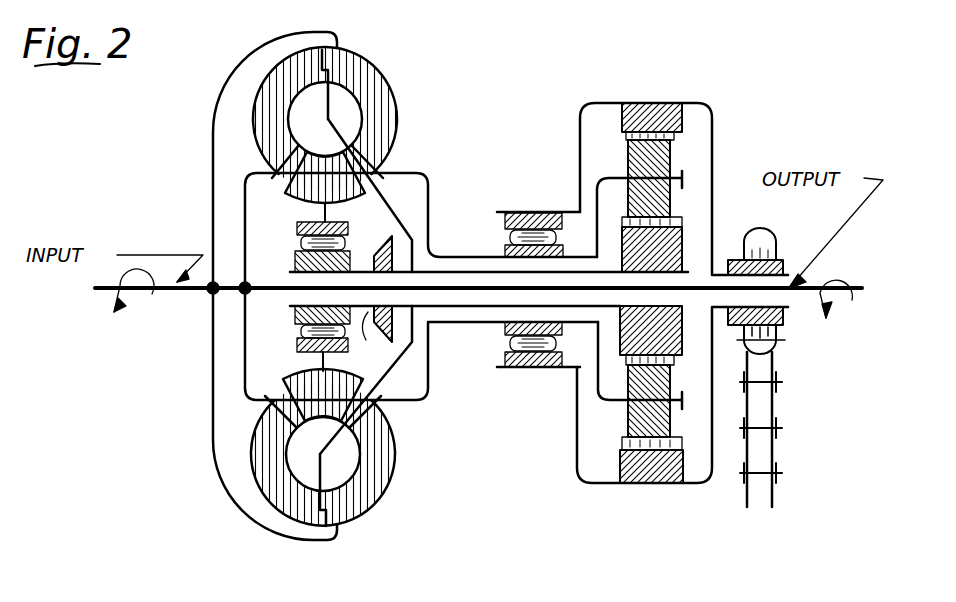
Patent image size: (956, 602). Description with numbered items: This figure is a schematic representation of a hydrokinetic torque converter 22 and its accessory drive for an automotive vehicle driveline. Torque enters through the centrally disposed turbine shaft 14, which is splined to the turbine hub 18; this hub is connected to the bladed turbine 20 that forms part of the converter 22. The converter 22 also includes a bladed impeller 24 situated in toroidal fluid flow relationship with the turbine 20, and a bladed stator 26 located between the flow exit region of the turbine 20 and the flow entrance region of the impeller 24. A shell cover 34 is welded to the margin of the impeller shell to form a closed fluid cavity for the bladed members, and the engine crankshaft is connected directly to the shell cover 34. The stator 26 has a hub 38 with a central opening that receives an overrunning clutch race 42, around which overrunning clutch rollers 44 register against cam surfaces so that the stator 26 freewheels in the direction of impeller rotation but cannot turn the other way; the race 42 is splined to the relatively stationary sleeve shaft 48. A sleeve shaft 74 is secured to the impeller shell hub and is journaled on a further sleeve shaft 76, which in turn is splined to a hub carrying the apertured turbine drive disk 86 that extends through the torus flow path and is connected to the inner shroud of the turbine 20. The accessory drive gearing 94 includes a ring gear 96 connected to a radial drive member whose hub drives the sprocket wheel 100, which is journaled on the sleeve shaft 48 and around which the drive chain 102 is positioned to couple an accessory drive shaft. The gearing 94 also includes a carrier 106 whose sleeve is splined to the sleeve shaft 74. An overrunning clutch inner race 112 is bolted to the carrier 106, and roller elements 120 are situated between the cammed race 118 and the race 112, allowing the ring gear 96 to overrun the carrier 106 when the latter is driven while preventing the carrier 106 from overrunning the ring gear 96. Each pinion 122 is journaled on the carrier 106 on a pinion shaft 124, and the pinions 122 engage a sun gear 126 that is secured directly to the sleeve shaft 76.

The turbine shaft 14 is at (463, 300).
The turbine hub 18 is at (243, 212).
The bladed turbine 20 is at (262, 112).
The hydrokinetic torque converter 22 is at (382, 71).
The bladed impeller 24 is at (390, 117).
The bladed stator 26 is at (300, 195).
The shell cover 34 is at (249, 48).
The stator hub 38 is at (338, 224).
The overrunning clutch race 42 is at (300, 308).
The overrunning clutch rollers 44 is at (302, 248).
The stationary sleeve shaft 48 is at (378, 337).
The sleeve shaft 74 is at (488, 324).
The sleeve shaft 76 is at (573, 324).
The turbine drive disk 86 is at (388, 201).
The accessory drive gearing 94 is at (718, 127).
The ring gear 96 is at (668, 108).
The sprocket wheel 100 is at (784, 320).
The drive chain 102 is at (775, 360).
The carrier 106 is at (592, 384).
The overrunning clutch inner race 112 is at (503, 250).
The overrunning clutch race 118 is at (543, 194).
The overrunning clutch roller elements 120 is at (497, 360).
The pinion 122 is at (672, 168).
The pinion shaft 124 is at (623, 172).
The sun gear 126 is at (673, 241).